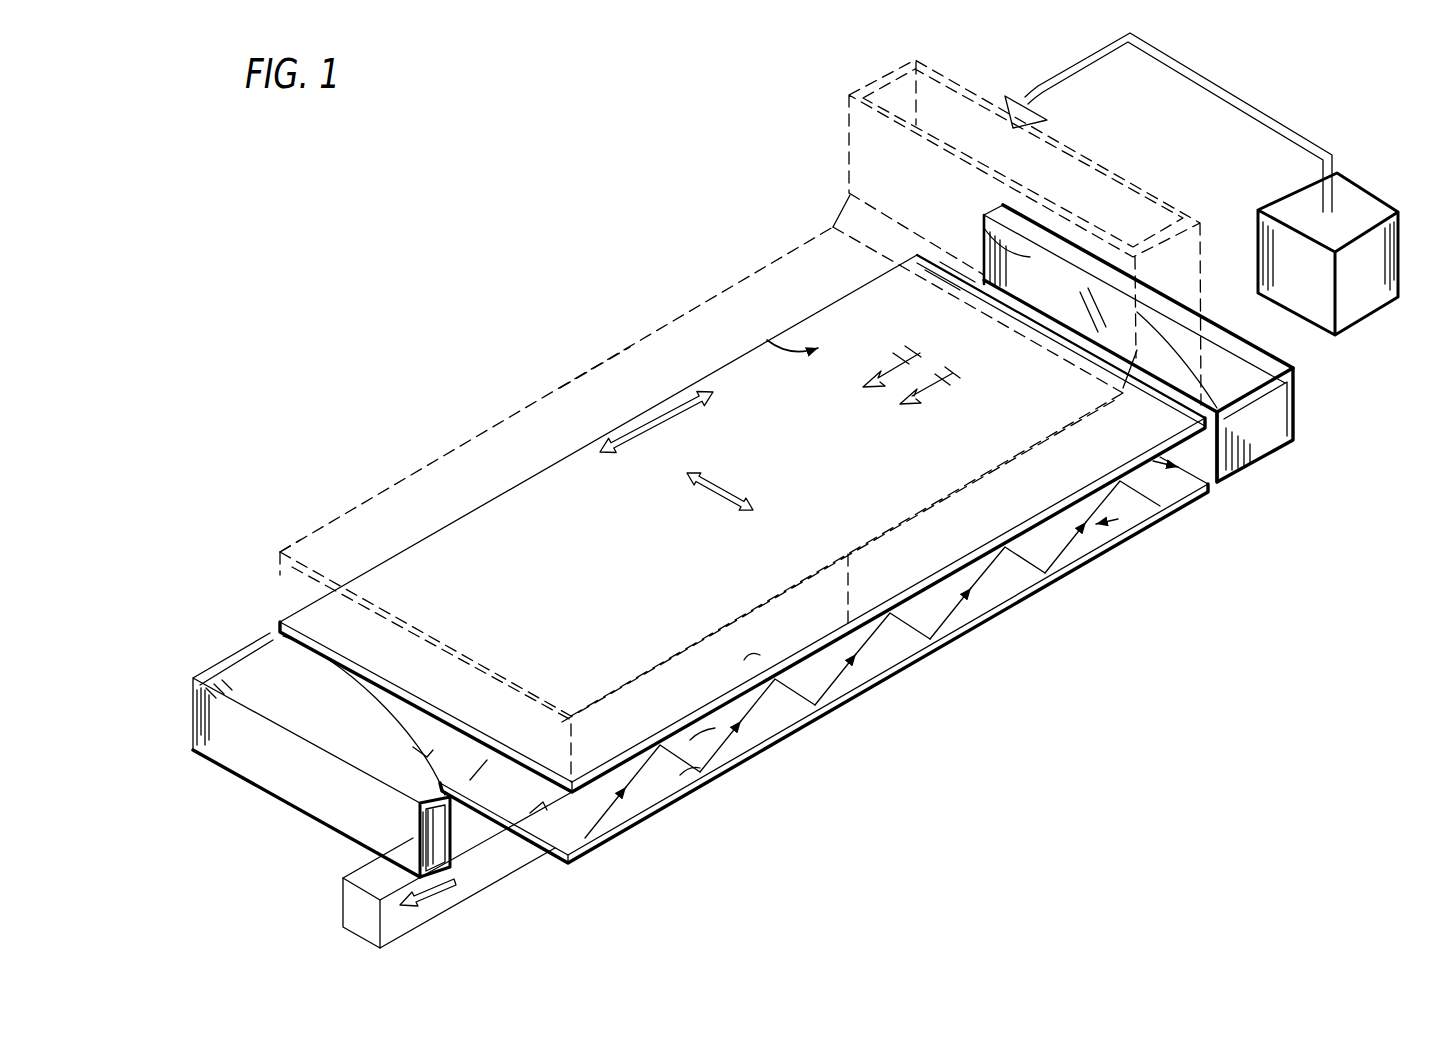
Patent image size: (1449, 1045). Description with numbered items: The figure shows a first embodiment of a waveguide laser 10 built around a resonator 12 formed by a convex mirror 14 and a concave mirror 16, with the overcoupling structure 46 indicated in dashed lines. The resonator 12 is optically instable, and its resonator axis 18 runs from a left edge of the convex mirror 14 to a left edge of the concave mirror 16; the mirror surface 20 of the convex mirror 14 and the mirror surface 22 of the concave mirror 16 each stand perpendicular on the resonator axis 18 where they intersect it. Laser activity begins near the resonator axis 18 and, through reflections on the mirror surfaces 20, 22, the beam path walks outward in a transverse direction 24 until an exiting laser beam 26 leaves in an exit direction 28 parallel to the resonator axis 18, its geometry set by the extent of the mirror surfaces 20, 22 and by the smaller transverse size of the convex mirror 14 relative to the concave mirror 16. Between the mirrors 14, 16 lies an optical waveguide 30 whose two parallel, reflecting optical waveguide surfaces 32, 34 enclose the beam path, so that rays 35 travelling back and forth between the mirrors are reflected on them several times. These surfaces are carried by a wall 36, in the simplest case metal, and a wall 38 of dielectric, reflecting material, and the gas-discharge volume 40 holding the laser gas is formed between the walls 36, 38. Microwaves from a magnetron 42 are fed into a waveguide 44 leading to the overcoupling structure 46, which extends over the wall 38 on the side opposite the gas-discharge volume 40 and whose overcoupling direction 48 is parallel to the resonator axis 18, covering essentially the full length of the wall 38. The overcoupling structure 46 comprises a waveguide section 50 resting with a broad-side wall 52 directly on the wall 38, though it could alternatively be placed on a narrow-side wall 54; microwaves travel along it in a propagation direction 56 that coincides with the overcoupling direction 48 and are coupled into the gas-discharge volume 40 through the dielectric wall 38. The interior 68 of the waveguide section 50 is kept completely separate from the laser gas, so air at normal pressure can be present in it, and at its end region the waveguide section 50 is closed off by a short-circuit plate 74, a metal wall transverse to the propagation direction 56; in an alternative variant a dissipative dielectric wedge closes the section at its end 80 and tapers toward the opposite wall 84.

The waveguide laser 10 is at (450, 315).
The resonator 12 is at (1140, 528).
The convex mirror 14 is at (237, 673).
The concave mirror 16 is at (1220, 370).
The resonator axis 18 is at (647, 415).
The mirror surface 20 is at (413, 727).
The mirror surface 22 is at (980, 216).
The transverse direction 24 is at (713, 493).
The exiting laser beam 26 is at (527, 873).
The exit direction 28 is at (443, 900).
The optical waveguide 30 is at (930, 605).
The optical waveguide surface 32 is at (800, 672).
The optical waveguide surface 34 is at (825, 690).
The rays 35 is at (693, 740).
The wall 36 is at (992, 614).
The wall 38 is at (1003, 543).
The gas-discharge volume 40 is at (1058, 536).
The magnetron 42 is at (1350, 303).
The waveguide 44 is at (853, 160).
The overcoupling structure 46 is at (767, 340).
The overcoupling direction 48 is at (905, 352).
The waveguide section 50 is at (415, 472).
The wall 52 is at (862, 622).
The wall 54 is at (680, 775).
The propagation direction 56 is at (945, 385).
The interior 68 is at (744, 660).
The short-circuit plate 74 is at (280, 550).
The end 80 is at (282, 547).
The wall 84 is at (597, 366).